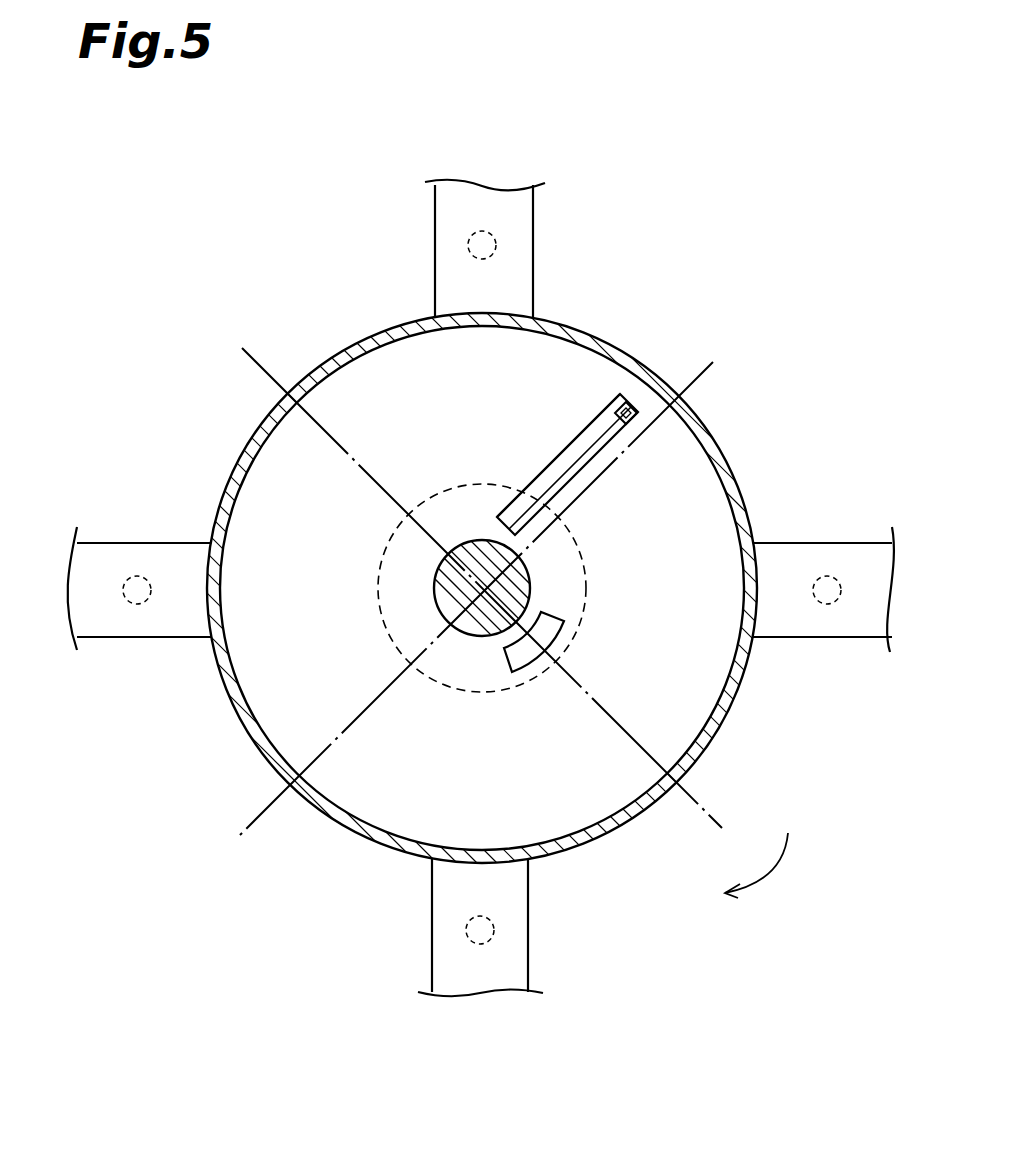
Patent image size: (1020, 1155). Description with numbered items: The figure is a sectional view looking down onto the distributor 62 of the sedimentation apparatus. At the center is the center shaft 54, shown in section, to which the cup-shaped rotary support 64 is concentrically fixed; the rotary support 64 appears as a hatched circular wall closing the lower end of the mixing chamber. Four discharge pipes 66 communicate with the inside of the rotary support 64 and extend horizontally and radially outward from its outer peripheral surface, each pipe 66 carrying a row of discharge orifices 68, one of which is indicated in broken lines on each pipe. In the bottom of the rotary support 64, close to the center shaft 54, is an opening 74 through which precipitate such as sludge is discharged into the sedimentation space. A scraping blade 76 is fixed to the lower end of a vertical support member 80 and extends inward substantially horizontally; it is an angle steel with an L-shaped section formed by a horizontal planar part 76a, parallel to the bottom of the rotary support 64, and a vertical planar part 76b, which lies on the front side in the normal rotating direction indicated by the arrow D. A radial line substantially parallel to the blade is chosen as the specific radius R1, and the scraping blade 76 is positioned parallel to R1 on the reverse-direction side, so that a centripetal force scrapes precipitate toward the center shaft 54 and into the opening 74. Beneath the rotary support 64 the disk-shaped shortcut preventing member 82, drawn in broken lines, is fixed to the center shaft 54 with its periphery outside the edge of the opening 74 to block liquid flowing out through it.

The center shaft 54 is at (434, 588).
The distributor 62 is at (325, 862).
The rotary support 64 is at (620, 817).
The discharge pipe 66 is at (450, 233).
The discharge orifice 68 is at (495, 240).
The opening 74 is at (525, 658).
The scraping blade 76 is at (567, 429).
The horizontal planar part 76a is at (542, 487).
The vertical planar part 76b is at (597, 456).
The support member 80 is at (625, 400).
The shortcut preventing member 82 is at (453, 692).
The specific radius R1 is at (723, 350).
The normal rotating direction D is at (768, 880).